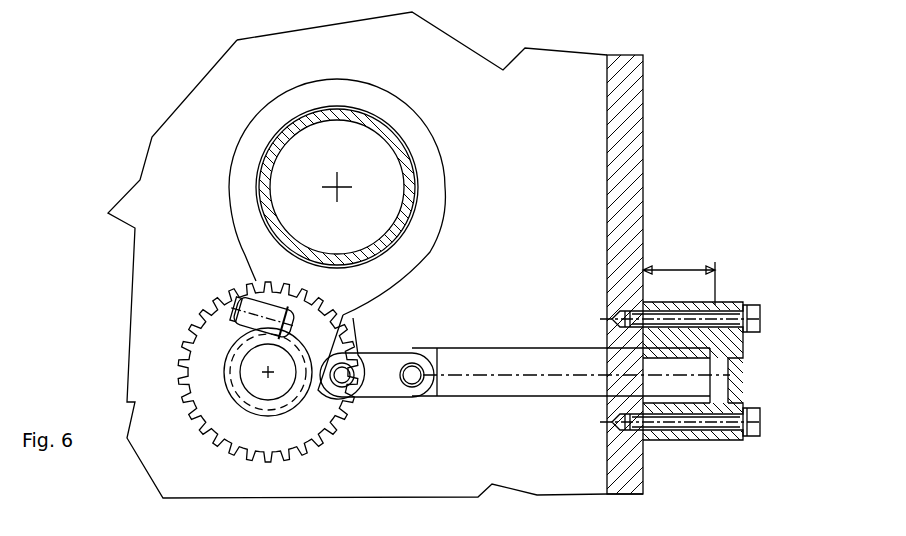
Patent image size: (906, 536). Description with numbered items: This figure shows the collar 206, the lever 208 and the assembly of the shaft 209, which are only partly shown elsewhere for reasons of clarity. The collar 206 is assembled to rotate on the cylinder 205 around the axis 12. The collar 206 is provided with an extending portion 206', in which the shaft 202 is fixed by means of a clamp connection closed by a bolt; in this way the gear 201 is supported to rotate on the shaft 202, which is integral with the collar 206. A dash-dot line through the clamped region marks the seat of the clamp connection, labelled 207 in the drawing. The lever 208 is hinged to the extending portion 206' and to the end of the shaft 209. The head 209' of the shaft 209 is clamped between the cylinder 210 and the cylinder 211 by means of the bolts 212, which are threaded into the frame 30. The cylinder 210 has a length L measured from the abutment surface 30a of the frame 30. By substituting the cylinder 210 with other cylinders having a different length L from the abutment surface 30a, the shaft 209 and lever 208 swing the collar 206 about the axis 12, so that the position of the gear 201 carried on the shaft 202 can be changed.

The axis 12 is at (340, 186).
The frame 30 is at (630, 131).
The abutment surface 30a is at (645, 472).
The gear 201 is at (210, 353).
The shaft 202 is at (267, 388).
The cylinder 205 is at (263, 193).
The collar 206 is at (340, 187).
The extending portion 206' is at (375, 353).
The key lug 207 is at (218, 308).
The lever 208 is at (382, 383).
The shaft 209 is at (571, 344).
The head 209' is at (770, 375).
The cylinder 210 is at (688, 440).
The cylinder 211 is at (722, 305).
The bolts 212 is at (762, 313).
The length L is at (686, 262).